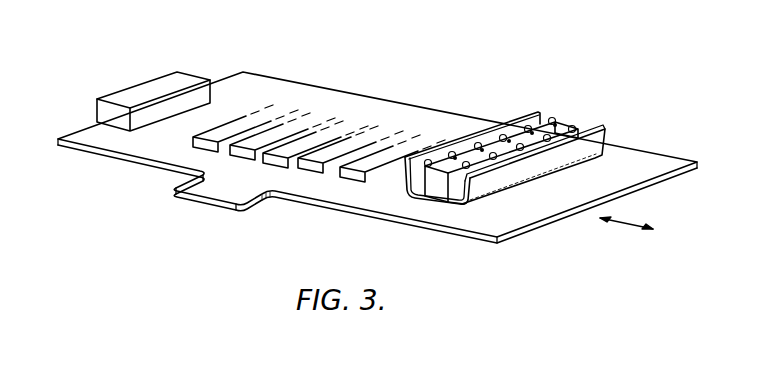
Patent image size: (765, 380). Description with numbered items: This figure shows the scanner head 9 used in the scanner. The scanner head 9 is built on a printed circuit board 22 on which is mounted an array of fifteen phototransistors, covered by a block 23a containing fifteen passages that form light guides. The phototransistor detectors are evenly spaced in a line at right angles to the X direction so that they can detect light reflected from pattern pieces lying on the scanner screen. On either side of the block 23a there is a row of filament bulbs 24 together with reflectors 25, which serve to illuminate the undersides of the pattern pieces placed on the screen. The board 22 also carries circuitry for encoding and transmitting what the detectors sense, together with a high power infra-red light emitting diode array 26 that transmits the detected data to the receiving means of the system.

The scanner head 9 is at (330, 206).
The printed circuit board 22 is at (543, 226).
The block 23a is at (563, 120).
The filament bulbs 24 is at (507, 132).
The reflectors 25 is at (604, 133).
The infra-red light emitting diode array 26 is at (194, 75).